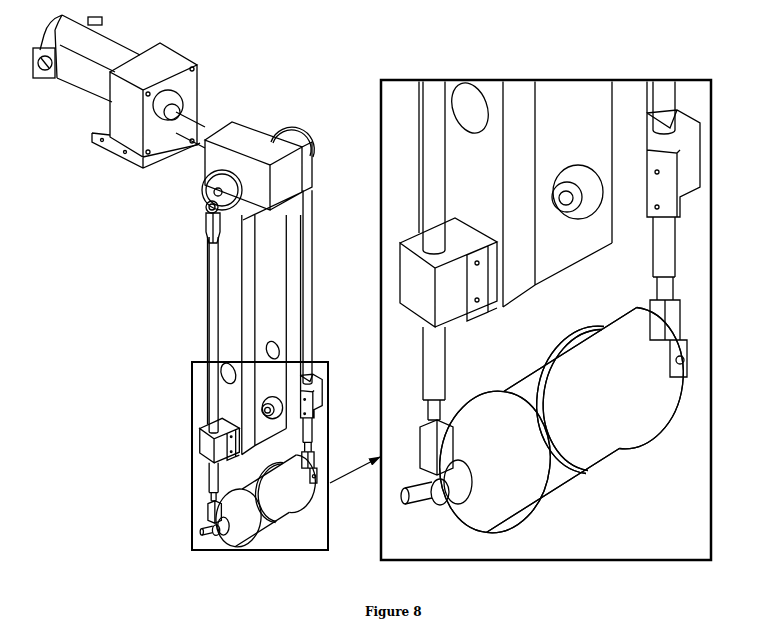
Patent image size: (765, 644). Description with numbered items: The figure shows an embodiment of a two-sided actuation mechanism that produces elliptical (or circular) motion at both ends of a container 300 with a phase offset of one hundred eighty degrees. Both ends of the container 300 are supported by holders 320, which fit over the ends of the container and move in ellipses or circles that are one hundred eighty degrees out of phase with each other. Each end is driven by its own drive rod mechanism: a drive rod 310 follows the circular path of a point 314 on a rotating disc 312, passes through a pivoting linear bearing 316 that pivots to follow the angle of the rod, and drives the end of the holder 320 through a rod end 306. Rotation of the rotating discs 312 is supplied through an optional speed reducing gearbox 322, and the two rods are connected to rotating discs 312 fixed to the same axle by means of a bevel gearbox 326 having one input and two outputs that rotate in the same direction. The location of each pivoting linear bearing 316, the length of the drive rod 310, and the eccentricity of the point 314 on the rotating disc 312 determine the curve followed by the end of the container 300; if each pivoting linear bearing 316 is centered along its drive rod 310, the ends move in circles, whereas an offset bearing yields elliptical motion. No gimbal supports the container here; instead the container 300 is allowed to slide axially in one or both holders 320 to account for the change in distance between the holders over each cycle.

The container 300 is at (590, 400).
The rod end 306 is at (443, 442).
The drive rod 310 is at (208, 288).
The rotating disc 312 is at (300, 122).
The point on rotating disc 314 is at (312, 170).
The pivoting linear bearing 316 is at (212, 447).
The holder 320 is at (125, 38).
The speed reducing gearbox 322 is at (193, 62).
The bevel gearbox 326 is at (247, 153).